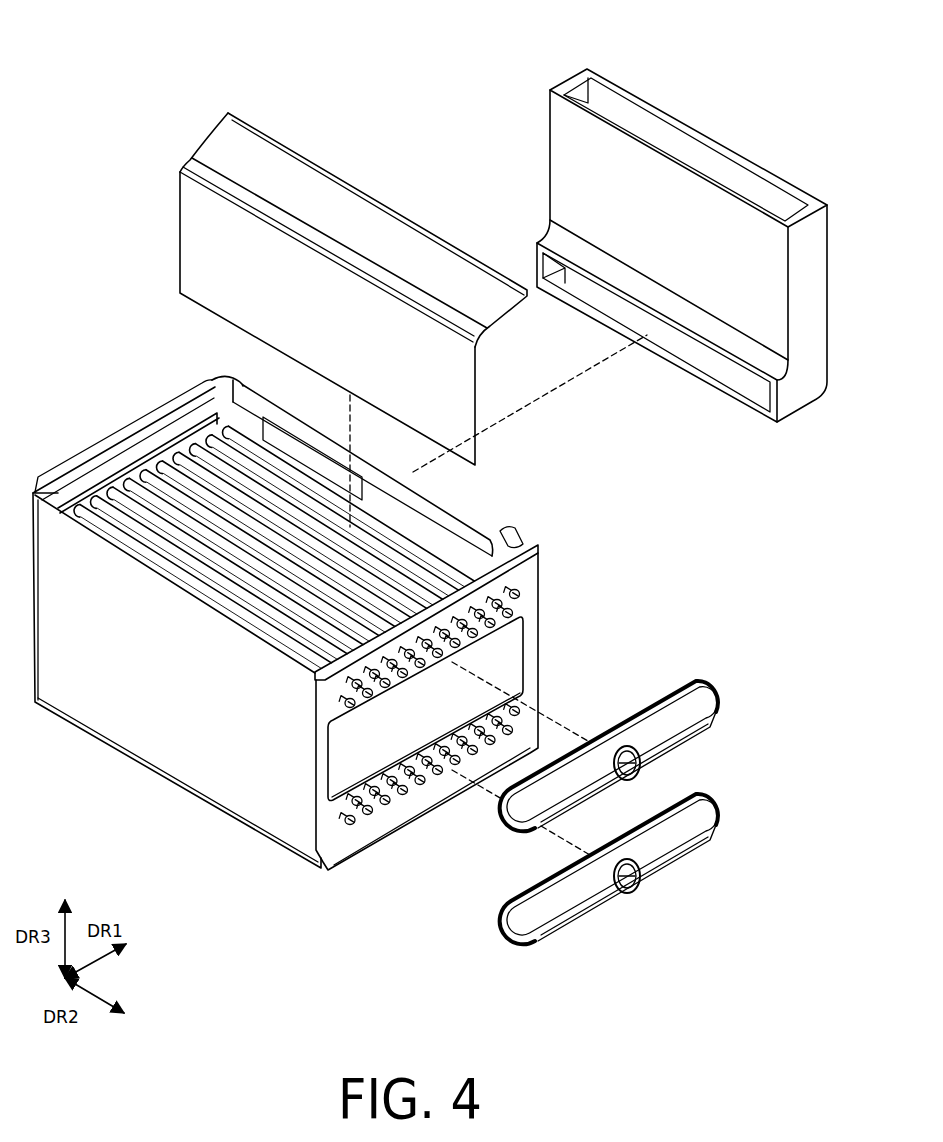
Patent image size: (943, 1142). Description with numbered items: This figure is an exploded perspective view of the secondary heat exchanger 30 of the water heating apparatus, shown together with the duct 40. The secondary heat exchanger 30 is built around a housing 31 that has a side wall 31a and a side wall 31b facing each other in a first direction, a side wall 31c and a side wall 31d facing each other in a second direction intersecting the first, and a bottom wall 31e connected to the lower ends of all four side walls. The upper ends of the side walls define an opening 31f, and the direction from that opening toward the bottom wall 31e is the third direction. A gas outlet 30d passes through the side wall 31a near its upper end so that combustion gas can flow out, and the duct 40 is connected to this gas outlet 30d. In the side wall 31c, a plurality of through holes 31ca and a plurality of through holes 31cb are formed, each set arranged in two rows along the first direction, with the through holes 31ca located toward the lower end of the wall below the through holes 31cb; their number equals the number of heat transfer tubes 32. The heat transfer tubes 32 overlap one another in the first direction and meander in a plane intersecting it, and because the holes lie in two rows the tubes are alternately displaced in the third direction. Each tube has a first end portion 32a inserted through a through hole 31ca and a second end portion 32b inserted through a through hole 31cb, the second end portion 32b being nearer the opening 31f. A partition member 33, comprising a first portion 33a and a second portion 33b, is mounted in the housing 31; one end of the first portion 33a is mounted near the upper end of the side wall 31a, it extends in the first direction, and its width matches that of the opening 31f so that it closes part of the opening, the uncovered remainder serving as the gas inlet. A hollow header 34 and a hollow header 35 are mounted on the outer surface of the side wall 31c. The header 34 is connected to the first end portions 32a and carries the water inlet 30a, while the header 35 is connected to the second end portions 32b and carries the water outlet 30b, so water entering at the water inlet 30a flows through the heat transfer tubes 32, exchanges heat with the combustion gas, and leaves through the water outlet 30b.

The secondary heat exchanger 30 is at (74, 28).
The water inlet 30a is at (640, 893).
The water outlet 30b is at (643, 710).
The gas outlet 30d is at (258, 432).
The housing 31 is at (87, 713).
The side wall 31a is at (483, 517).
The side wall 31b is at (116, 699).
The side wall 31c is at (445, 797).
The through holes 31ca is at (334, 808).
The through holes 31cb is at (495, 585).
The side wall 31d is at (57, 468).
The bottom wall 31e is at (375, 847).
The opening 31f is at (520, 533).
The heat transfer tubes 32 is at (118, 500).
The first end portion 32a is at (353, 826).
The second end portion 32b is at (513, 595).
The partition member 33 is at (93, 110).
The first portion 33a is at (217, 140).
The second portion 33b is at (193, 203).
The header 34 is at (570, 913).
The header 35 is at (700, 698).
The duct 40 is at (565, 147).